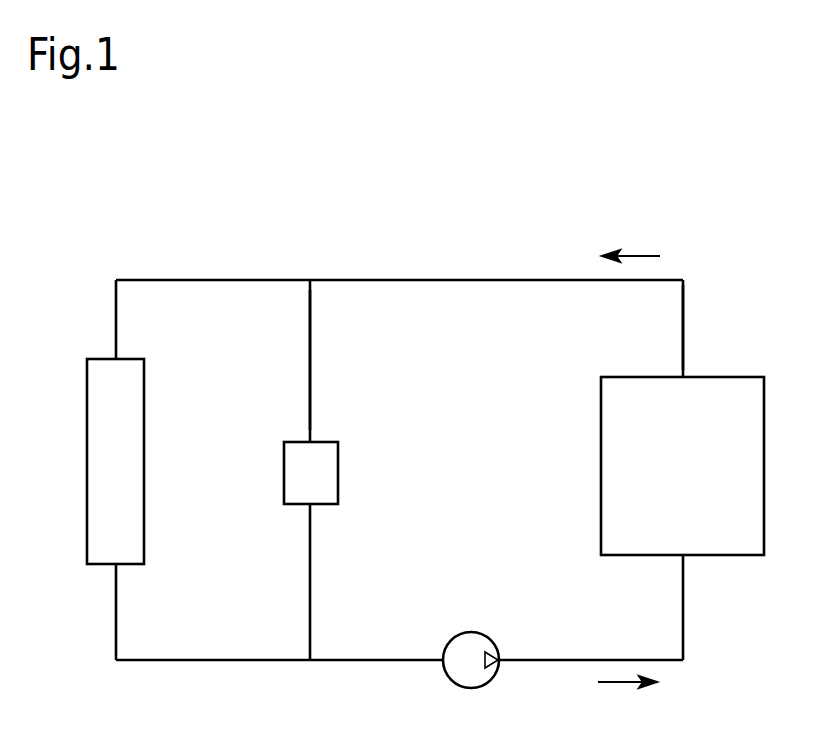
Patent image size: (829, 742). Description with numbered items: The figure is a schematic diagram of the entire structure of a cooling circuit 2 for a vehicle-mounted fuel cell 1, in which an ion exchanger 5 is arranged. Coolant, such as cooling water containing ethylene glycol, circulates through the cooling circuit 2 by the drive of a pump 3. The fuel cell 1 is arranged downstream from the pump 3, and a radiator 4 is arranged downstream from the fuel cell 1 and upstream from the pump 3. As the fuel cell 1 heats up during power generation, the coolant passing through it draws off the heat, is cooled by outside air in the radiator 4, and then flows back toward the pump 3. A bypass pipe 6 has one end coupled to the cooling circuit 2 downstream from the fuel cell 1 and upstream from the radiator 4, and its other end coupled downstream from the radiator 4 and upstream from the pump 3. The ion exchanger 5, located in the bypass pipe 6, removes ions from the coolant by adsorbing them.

The fuel cell 1 is at (745, 377).
The cooling circuit 2 is at (683, 279).
The pump 3 is at (471, 632).
The radiator 4 is at (130, 358).
The ion exchanger 5 is at (328, 442).
The bypass pipe 6 is at (312, 347).